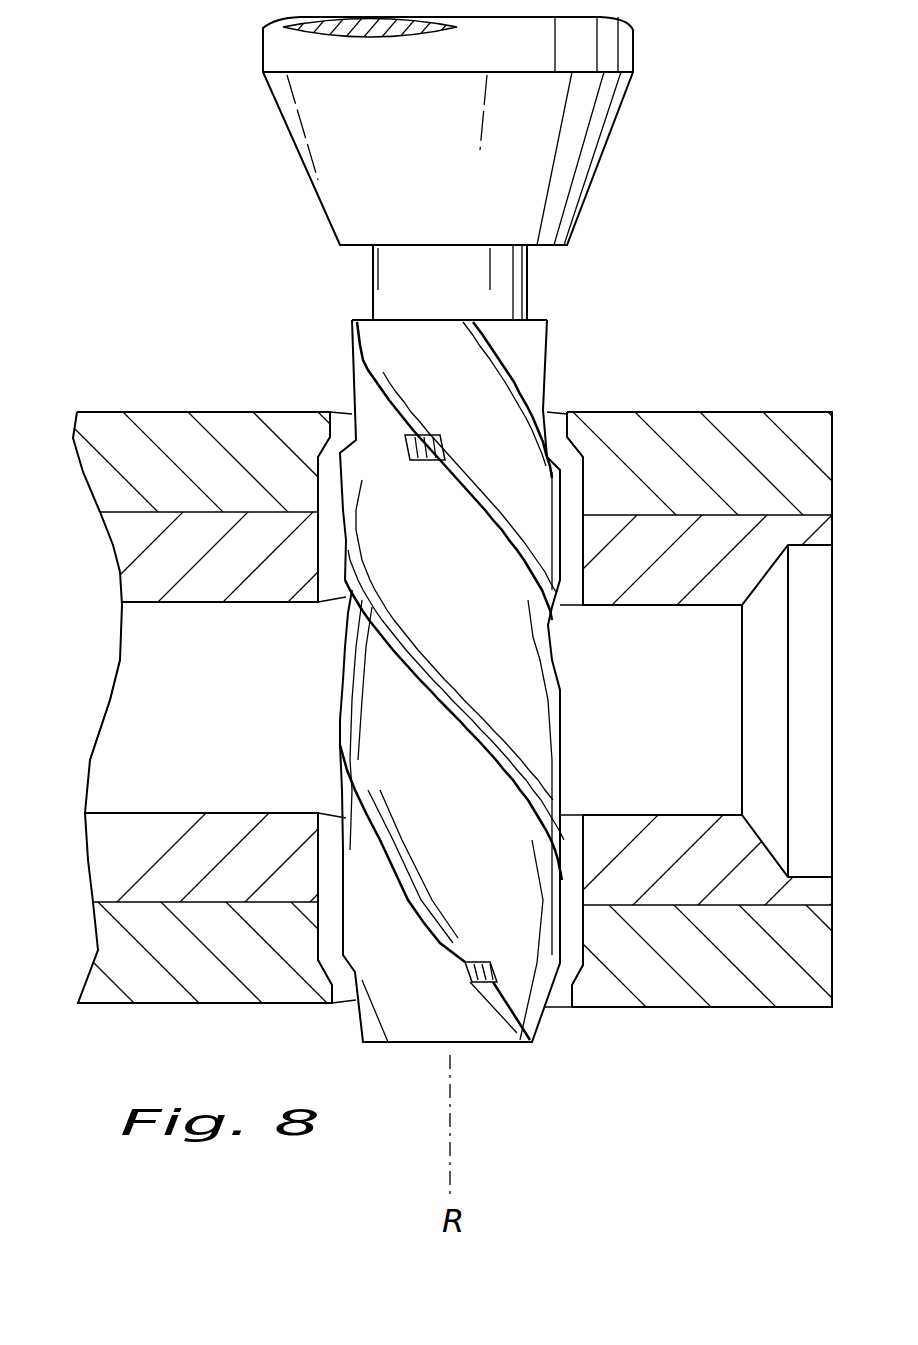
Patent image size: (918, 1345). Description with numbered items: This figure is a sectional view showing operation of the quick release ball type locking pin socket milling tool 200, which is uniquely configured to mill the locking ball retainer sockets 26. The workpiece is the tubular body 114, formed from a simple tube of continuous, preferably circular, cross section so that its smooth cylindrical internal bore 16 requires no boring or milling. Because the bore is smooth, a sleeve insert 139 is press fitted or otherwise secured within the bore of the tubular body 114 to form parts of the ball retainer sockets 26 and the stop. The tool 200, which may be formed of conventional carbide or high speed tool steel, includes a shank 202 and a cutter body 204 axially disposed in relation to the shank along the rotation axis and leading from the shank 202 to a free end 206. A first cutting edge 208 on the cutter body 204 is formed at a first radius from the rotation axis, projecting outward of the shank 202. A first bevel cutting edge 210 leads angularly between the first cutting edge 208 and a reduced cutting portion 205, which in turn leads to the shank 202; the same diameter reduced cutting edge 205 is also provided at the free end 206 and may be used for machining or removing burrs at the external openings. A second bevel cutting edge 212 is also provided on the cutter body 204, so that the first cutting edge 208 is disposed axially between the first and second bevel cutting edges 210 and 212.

The tubular body 114 is at (465, 687).
The sleeve insert 139 is at (100, 549).
The internal bore 16 is at (148, 742).
The locking ball retainer sockets 26 is at (560, 408).
The quick release ball type locking pin socket milling tool 200 is at (484, 556).
The shank 202 is at (517, 286).
The cutter body 204 is at (471, 711).
The reduced cutting portion 205 is at (380, 383).
The free end 206 is at (490, 1048).
The first cutting edge 208 is at (380, 843).
The first bevel cutting edge 210 is at (342, 450).
The second bevel cutting edge 212 is at (465, 968).